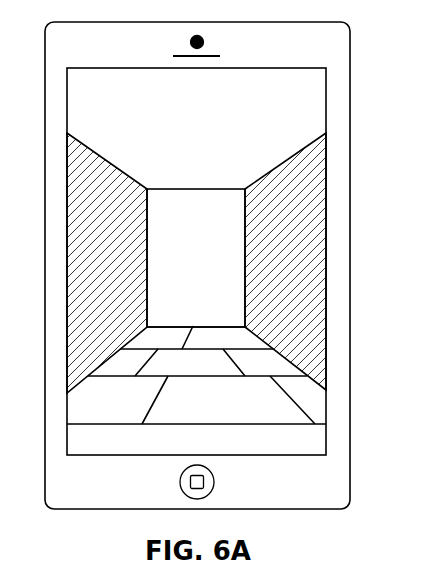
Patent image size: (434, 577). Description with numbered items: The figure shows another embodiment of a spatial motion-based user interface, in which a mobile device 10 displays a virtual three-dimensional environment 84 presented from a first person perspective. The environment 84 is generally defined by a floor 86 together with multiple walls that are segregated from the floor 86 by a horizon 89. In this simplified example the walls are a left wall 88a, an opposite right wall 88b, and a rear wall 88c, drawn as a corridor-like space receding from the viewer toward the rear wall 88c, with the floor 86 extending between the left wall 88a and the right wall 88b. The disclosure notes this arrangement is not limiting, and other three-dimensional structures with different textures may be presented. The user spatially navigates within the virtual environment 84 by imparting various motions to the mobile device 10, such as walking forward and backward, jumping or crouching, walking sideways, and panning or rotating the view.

The mobile device 10 is at (350, 359).
The virtual three-dimensional environment 84 is at (308, 95).
The floor 86 is at (315, 405).
The left wall 88a is at (85, 256).
The right wall 88b is at (302, 257).
The rear wall 88c is at (222, 217).
The horizon 89 is at (217, 325).